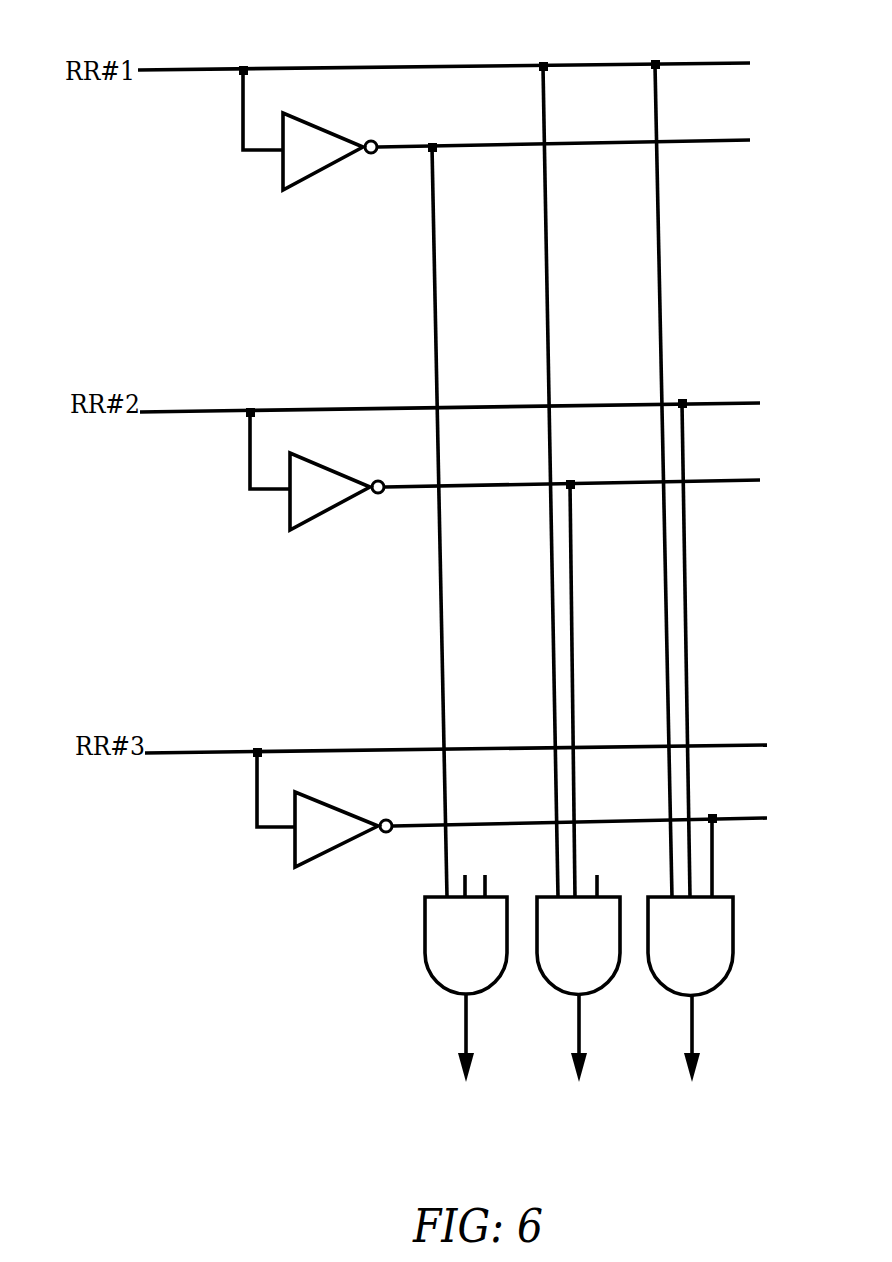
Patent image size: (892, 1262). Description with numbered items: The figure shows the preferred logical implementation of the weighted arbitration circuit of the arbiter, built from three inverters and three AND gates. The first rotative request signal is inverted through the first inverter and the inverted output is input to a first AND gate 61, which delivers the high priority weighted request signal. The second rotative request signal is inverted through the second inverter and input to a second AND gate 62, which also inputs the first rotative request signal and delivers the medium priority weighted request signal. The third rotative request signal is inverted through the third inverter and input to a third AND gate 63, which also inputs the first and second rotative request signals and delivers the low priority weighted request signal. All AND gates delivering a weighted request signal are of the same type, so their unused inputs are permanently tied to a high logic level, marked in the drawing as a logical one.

The first AND gate 61 is at (418, 965).
The second AND gate 62 is at (603, 931).
The third AND gate 63 is at (720, 952).